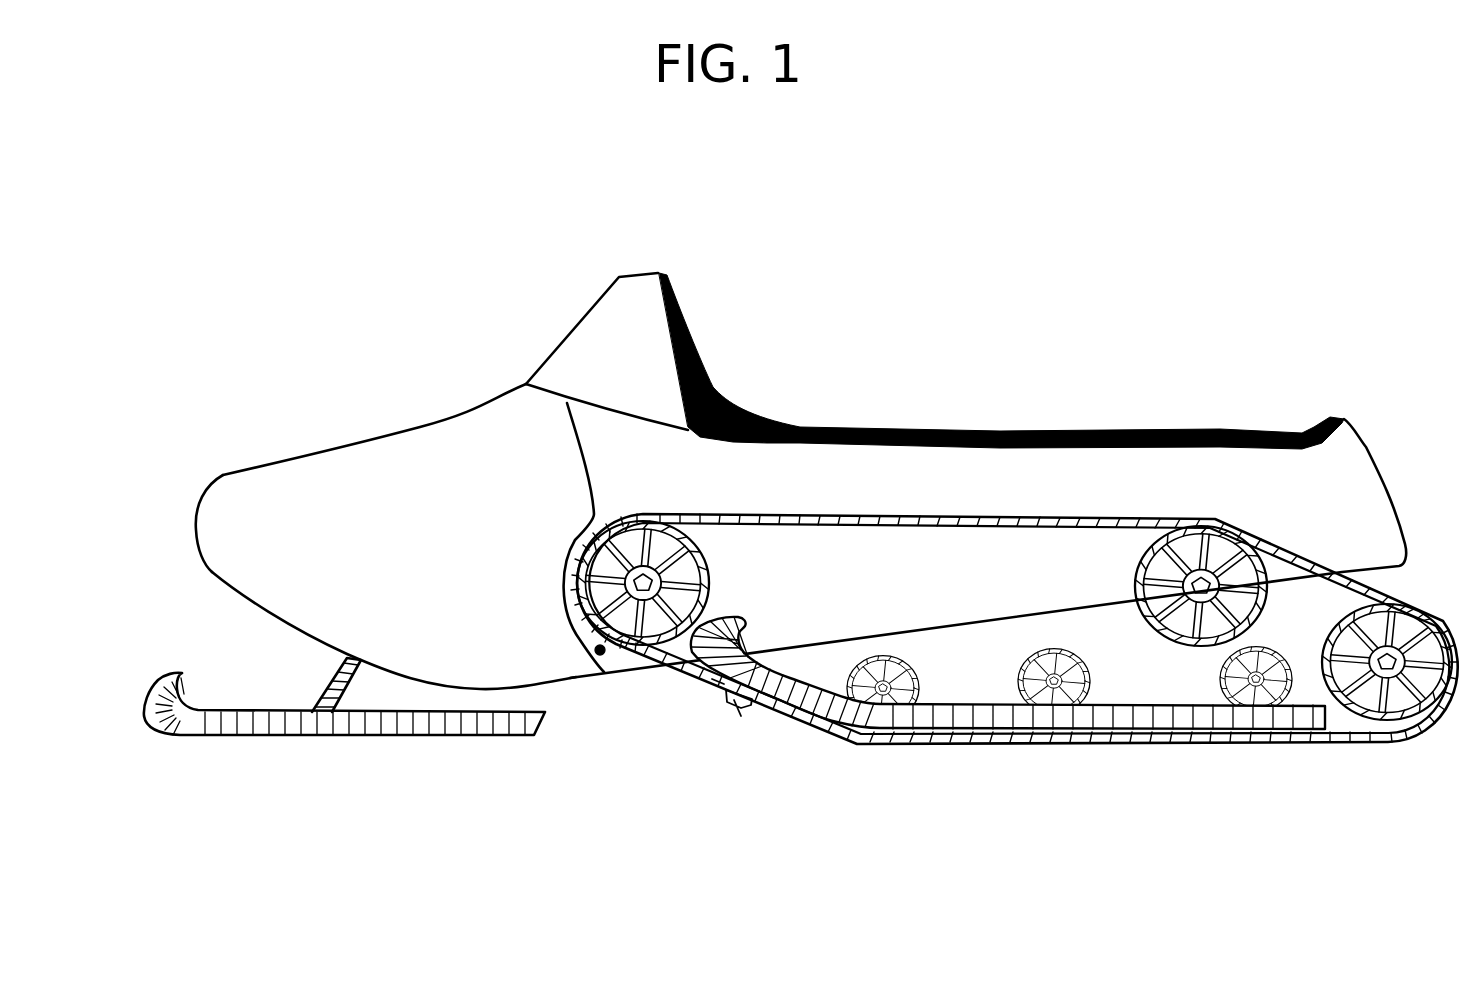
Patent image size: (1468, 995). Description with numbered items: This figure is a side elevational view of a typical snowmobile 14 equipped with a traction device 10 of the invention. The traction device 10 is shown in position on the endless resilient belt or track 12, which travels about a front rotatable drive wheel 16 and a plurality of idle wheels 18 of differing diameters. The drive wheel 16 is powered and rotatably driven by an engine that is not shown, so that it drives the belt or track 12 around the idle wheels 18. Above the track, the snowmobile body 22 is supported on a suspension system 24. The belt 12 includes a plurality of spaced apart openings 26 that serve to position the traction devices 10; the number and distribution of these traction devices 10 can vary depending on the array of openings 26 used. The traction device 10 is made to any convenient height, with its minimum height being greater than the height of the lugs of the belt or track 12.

The traction device 10 is at (737, 703).
The belt or track 12 is at (921, 744).
The snowmobile 14 is at (775, 489).
The front rotatable drive wheel 16 is at (622, 618).
The idle wheels 18 is at (1071, 667).
The snowmobile body 22 is at (440, 463).
The suspension system 24 is at (790, 673).
The openings 26 is at (717, 685).